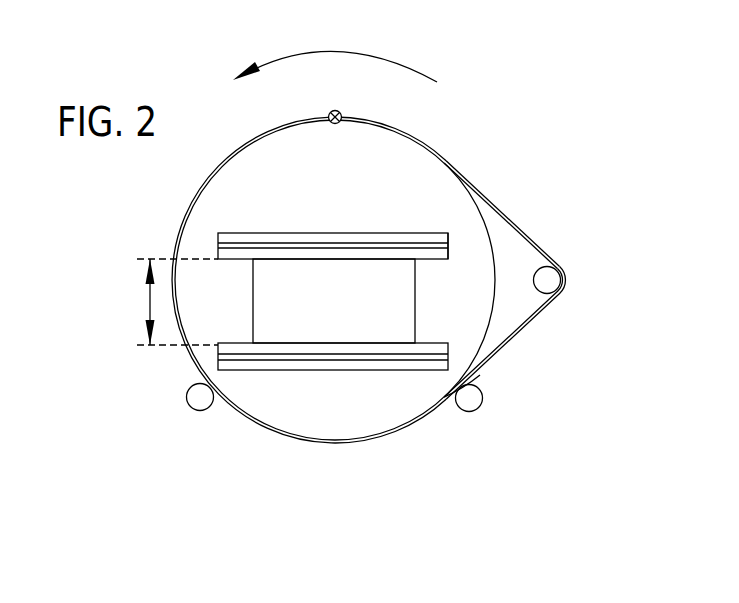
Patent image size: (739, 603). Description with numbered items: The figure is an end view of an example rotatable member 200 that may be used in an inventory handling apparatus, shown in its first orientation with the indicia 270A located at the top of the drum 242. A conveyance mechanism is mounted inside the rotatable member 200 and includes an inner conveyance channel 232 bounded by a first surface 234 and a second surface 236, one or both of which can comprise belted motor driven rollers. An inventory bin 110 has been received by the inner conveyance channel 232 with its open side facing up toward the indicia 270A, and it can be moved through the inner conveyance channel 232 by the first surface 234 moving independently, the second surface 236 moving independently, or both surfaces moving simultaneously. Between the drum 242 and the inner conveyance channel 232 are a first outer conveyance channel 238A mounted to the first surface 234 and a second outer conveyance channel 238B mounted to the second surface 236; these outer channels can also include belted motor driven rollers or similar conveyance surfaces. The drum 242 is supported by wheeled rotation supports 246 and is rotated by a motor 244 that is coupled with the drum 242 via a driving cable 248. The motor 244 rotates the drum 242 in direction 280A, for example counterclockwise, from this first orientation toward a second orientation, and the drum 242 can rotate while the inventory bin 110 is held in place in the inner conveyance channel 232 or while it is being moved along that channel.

The rotatable member 200 is at (521, 93).
The inventory bin 110 is at (339, 312).
The inner conveyance channel 232 is at (150, 302).
The first surface 234 is at (480, 362).
The second surface 236 is at (448, 270).
The first outer conveyance channel 238A is at (345, 370).
The second outer conveyance channel 238B is at (345, 233).
The drum 242 is at (514, 330).
The motor 244 is at (563, 291).
The wheeled rotation supports 246 is at (197, 411).
The driving cable 248 is at (492, 200).
The indicia 270A is at (343, 112).
The direction 280A is at (340, 53).